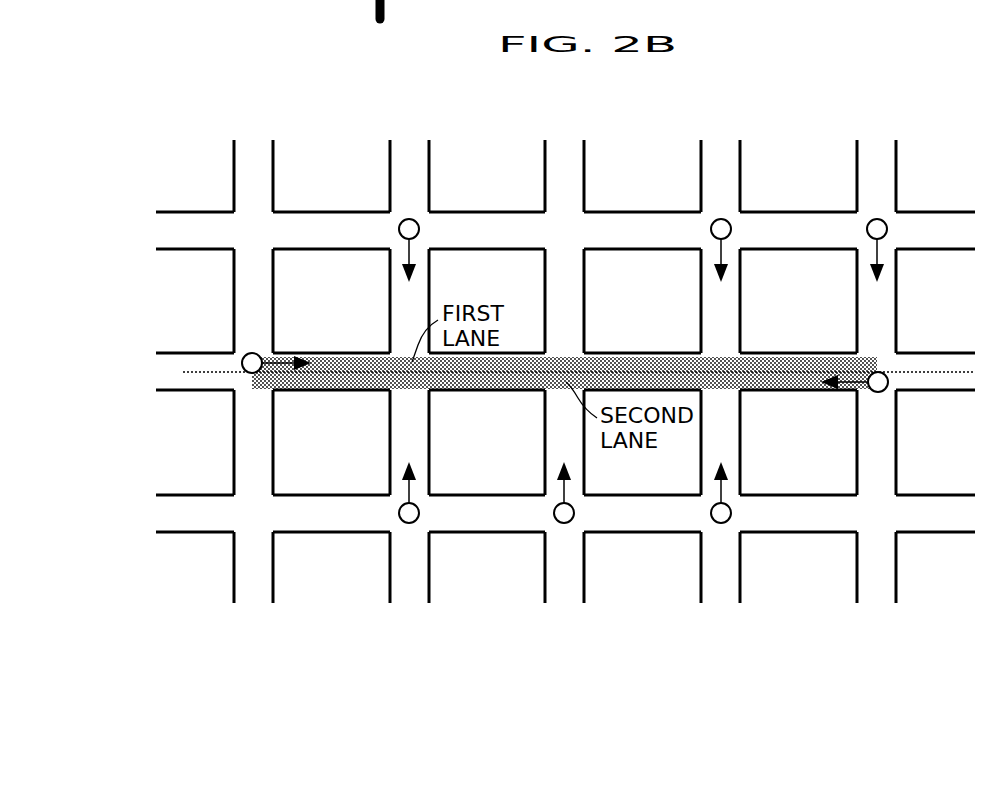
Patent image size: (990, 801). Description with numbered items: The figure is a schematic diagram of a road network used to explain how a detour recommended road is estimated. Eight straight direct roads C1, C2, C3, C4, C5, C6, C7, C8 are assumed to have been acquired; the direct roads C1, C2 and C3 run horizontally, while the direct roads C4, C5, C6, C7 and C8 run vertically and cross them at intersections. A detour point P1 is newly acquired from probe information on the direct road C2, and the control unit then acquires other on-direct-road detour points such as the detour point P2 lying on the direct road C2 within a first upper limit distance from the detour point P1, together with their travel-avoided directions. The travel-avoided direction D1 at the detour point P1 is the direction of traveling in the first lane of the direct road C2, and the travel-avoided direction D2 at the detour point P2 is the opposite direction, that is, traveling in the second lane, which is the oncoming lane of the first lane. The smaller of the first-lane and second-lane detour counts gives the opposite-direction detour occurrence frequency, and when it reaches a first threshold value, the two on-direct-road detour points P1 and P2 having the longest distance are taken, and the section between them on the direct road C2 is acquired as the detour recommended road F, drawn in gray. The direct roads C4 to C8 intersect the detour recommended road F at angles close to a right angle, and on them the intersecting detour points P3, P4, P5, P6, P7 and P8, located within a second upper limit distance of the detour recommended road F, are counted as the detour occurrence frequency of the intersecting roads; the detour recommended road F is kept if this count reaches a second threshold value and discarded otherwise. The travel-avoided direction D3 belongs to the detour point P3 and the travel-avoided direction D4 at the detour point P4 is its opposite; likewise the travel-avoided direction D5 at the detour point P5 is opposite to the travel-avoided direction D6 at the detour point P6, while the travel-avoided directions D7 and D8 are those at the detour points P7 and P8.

The direct road C1 is at (163, 513).
The direct road C2 is at (167, 372).
The direct road C3 is at (170, 229).
The direct road C4 is at (253, 152).
The direct road C5 is at (409, 152).
The direct road C6 is at (564, 152).
The direct road C7 is at (721, 152).
The direct road C8 is at (877, 152).
The detour point P1 is at (249, 349).
The on-direct-road detour point P2 is at (896, 382).
The intersecting detour point P3 is at (391, 229).
The intersecting detour point P4 is at (428, 513).
The intersecting detour point P5 is at (737, 229).
The intersecting detour point P6 is at (739, 513).
The intersecting detour point P7 is at (583, 513).
The intersecting detour point P8 is at (895, 229).
The travel-avoided direction D1 is at (307, 364).
The travel-avoided direction D2 is at (824, 382).
The travel-avoided direction D3 is at (410, 276).
The travel-avoided direction D4 is at (412, 467).
The travel-avoided direction D5 is at (722, 276).
The travel-avoided direction D6 is at (722, 467).
The travel-avoided direction D7 is at (567, 467).
The travel-avoided direction D8 is at (881, 276).
The detour recommended road F is at (579, 373).